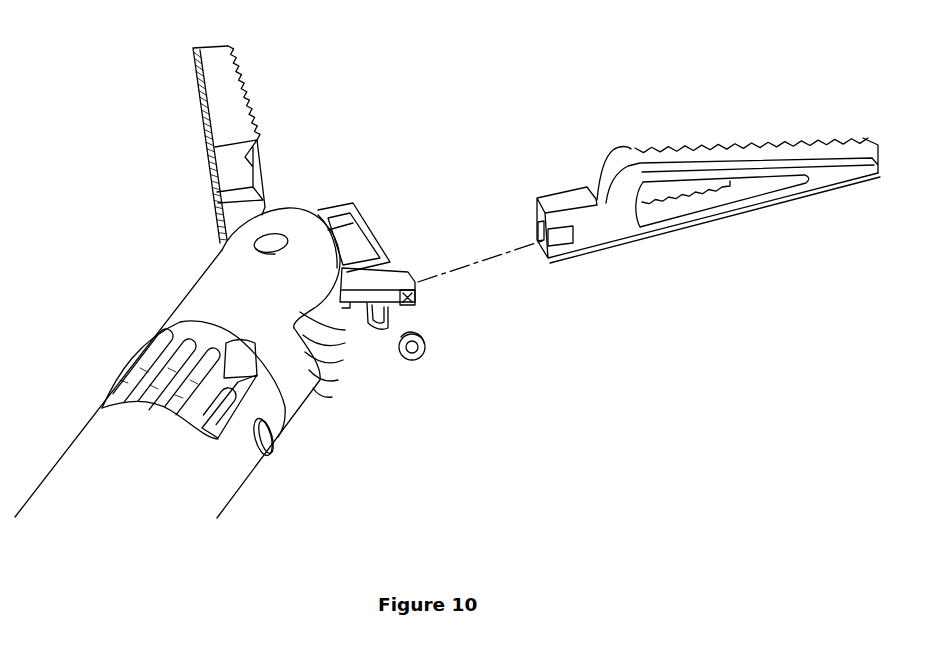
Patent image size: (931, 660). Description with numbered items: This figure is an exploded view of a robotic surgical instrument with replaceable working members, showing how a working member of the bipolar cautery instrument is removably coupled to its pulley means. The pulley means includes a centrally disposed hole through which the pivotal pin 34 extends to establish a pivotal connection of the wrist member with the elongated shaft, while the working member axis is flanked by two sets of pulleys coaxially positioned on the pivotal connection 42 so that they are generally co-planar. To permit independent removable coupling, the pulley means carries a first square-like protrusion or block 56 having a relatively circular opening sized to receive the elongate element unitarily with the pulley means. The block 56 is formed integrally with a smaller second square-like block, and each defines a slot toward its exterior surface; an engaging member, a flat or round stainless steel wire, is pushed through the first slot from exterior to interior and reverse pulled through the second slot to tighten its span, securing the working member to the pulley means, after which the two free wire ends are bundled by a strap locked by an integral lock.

The pivotal pin 34 is at (268, 433).
The pivotal connection 42 is at (277, 247).
The first square-like block 56 is at (377, 320).